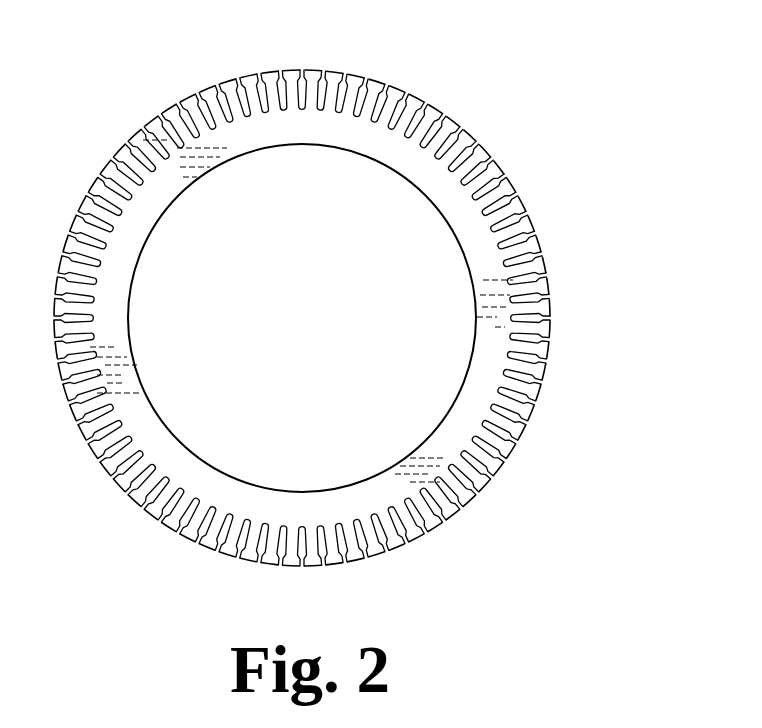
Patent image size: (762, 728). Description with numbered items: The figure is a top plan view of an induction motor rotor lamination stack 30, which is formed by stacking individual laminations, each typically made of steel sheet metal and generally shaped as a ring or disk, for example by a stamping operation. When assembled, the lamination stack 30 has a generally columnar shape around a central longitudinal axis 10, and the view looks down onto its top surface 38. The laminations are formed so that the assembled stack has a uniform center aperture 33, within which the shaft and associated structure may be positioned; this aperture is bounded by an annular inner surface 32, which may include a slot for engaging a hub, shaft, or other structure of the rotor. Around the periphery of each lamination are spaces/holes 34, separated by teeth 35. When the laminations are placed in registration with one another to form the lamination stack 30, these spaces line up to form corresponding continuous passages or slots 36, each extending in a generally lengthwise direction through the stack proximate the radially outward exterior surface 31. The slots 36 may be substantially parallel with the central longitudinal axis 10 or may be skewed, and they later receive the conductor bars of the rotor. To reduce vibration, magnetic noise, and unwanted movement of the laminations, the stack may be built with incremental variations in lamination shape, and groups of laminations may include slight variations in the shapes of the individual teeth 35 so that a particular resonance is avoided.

The central longitudinal axis 10 is at (304, 313).
The lamination stack 30 is at (339, 296).
The radially outward exterior surface 31 is at (250, 75).
The annular inner surface 32 is at (340, 150).
The center aperture 33 is at (240, 290).
The spaces/holes 34 is at (413, 110).
The teeth 35 is at (485, 157).
The slots 36 is at (527, 412).
The top surface 38 is at (121, 263).